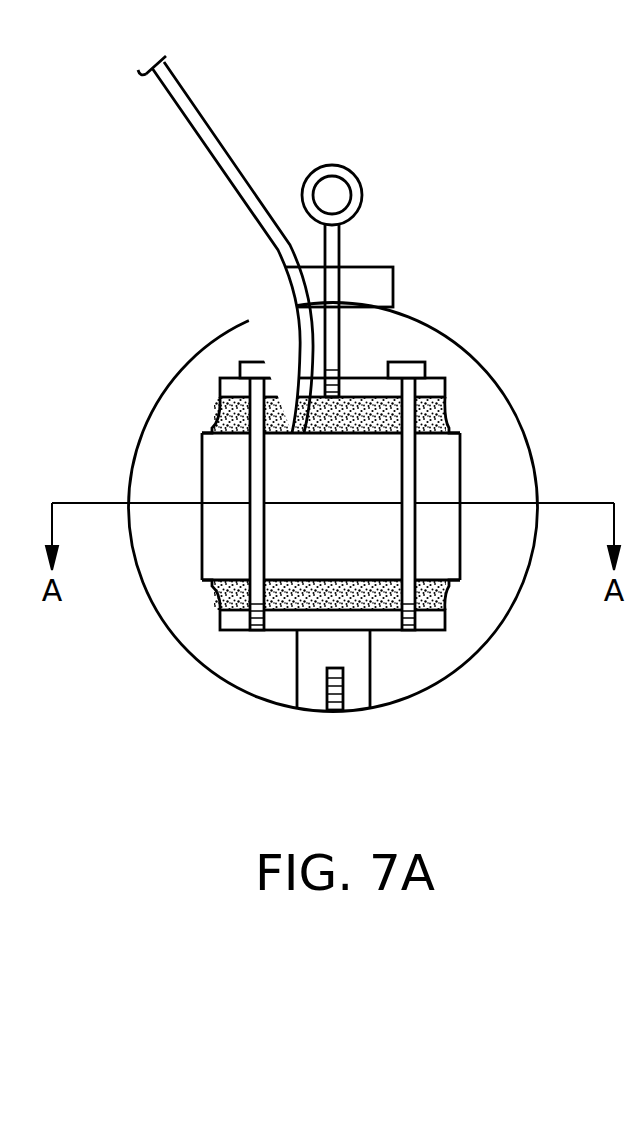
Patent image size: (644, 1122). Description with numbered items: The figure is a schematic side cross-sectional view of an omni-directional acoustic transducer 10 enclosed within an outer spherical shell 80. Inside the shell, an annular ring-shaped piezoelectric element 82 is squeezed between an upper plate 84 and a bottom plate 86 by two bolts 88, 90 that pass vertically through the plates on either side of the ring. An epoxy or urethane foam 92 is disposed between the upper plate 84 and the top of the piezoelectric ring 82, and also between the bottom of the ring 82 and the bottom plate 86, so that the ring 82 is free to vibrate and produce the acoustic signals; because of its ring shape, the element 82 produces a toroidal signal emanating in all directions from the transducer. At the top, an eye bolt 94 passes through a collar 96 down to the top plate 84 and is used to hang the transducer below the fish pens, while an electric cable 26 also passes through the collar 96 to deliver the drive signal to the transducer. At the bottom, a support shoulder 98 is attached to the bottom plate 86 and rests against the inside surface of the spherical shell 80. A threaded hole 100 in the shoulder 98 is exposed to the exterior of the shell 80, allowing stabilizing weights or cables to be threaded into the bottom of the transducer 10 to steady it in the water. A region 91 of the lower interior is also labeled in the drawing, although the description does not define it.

The omni-directional acoustic transducer 10 is at (598, 186).
The electric cable 26 is at (205, 117).
The outer spherical shell 80 is at (540, 458).
The piezoelectric element 82 is at (442, 450).
The upper plate 84 is at (437, 387).
The bottom plate 86 is at (443, 615).
The bolt 88 is at (257, 360).
The bolt 90 is at (410, 360).
The lower housing region 91 is at (237, 663).
The epoxy or urethane foam 92 is at (217, 417).
The eye bolt 94 is at (355, 173).
The collar 96 is at (398, 278).
The support shoulder 98 is at (353, 700).
The threaded hole 100 is at (333, 710).